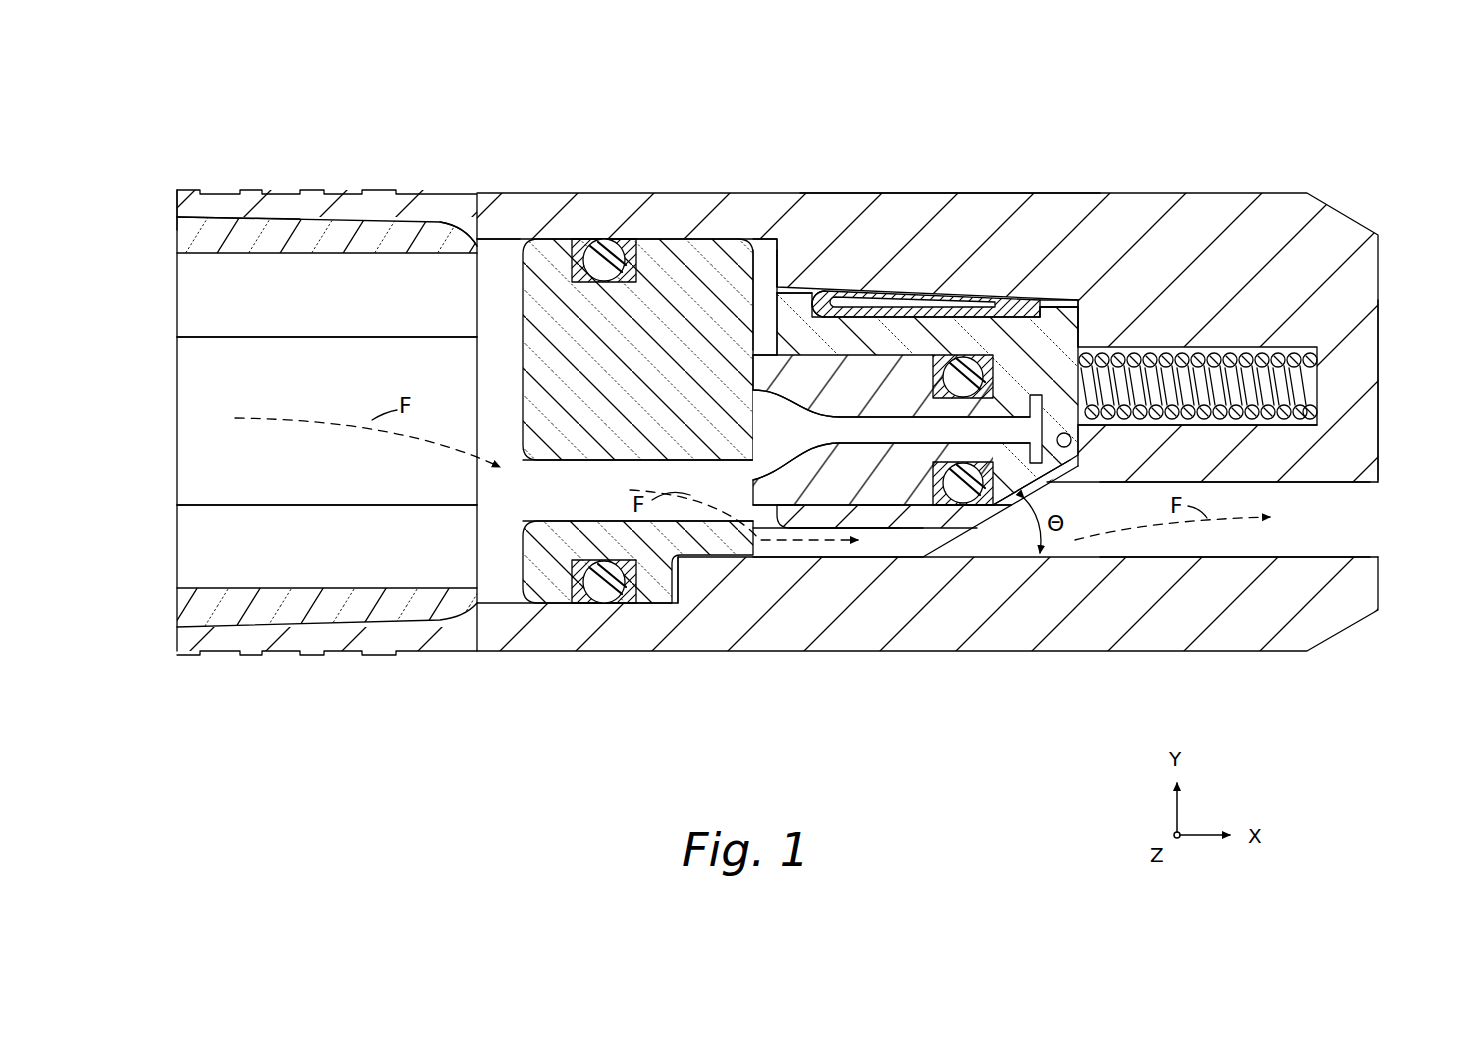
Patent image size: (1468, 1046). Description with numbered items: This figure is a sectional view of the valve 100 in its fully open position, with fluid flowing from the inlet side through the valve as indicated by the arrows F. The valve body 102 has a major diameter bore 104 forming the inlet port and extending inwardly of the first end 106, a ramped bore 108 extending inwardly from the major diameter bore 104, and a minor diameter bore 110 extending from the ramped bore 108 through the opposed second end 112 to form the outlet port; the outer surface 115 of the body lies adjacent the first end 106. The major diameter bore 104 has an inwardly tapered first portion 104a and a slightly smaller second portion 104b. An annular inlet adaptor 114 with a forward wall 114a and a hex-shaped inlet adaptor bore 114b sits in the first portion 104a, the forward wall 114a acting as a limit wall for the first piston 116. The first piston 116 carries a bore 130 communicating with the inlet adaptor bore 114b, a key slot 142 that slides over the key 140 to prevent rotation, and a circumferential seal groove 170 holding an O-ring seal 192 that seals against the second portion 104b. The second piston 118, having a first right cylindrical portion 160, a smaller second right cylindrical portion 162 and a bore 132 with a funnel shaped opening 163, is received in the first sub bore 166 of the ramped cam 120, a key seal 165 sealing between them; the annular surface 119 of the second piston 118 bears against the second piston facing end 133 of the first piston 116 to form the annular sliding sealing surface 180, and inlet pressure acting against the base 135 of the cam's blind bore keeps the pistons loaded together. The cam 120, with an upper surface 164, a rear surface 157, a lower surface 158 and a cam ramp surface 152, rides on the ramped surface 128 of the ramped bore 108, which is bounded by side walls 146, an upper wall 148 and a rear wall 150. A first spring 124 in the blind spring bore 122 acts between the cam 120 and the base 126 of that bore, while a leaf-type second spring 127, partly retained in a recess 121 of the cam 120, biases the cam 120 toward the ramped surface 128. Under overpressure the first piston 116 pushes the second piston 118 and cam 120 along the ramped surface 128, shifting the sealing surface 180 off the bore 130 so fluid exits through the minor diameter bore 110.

The valve 100 is at (147, 48).
The valve body 102 is at (1150, 190).
The major diameter bore 104 is at (768, 234).
The first portion of major diameter bore 104a is at (232, 222).
The second portion of major diameter bore 104b is at (505, 241).
The first end 106 is at (180, 196).
The ramped bore 108 is at (770, 547).
The minor diameter bore 110 is at (1348, 531).
The second end 112 is at (1380, 408).
The inlet adaptor 114 is at (282, 222).
The forward wall 114a is at (504, 240).
The inlet adaptor bore 114b is at (205, 425).
The outer surface 115 is at (932, 192).
The first piston 116 is at (703, 234).
The second piston 118 is at (830, 518).
The annular surface 119 is at (780, 370).
The ramped cam 120 is at (905, 530).
The recess 121 is at (940, 300).
The blind spring bore 122 is at (1198, 356).
The first spring 124 is at (1160, 355).
The base of blind spring bore 126 is at (1300, 420).
The second spring 127 is at (848, 302).
The ramped surface 128 is at (983, 512).
The bore of first piston 130 is at (600, 505).
The bore of second piston 132 is at (905, 430).
The second piston facing end 133 is at (756, 272).
The base of stepped blind bore 135 is at (1076, 458).
The key 140 is at (700, 572).
The key slot 142 is at (674, 568).
The side walls 146 is at (1006, 292).
The upper wall 148 is at (1010, 312).
The rear wall 150 is at (1071, 443).
The cam ramp surface 152 is at (955, 508).
The rear surface 157 is at (1080, 318).
The lower surface 158 is at (878, 520).
The first right cylindrical portion 160 is at (798, 495).
The second right cylindrical portion 162 is at (1045, 480).
The funnel shaped opening 163 is at (780, 455).
The upper surface 164 is at (1058, 302).
The seal 165 is at (950, 500).
The first sub bore 166 is at (875, 470).
The circumferential seal groove 170 is at (618, 237).
The annular sliding sealing surface 180 is at (780, 365).
The seal 192 is at (604, 607).